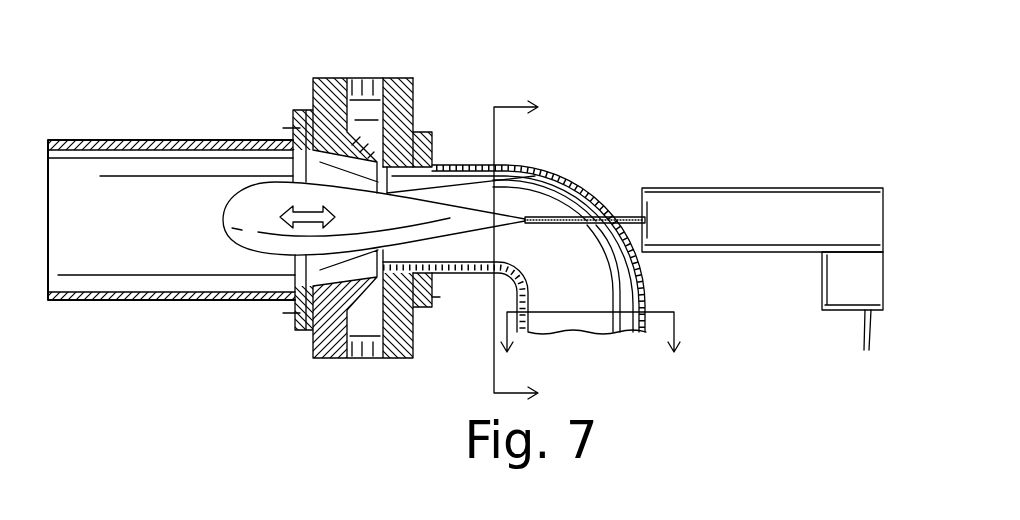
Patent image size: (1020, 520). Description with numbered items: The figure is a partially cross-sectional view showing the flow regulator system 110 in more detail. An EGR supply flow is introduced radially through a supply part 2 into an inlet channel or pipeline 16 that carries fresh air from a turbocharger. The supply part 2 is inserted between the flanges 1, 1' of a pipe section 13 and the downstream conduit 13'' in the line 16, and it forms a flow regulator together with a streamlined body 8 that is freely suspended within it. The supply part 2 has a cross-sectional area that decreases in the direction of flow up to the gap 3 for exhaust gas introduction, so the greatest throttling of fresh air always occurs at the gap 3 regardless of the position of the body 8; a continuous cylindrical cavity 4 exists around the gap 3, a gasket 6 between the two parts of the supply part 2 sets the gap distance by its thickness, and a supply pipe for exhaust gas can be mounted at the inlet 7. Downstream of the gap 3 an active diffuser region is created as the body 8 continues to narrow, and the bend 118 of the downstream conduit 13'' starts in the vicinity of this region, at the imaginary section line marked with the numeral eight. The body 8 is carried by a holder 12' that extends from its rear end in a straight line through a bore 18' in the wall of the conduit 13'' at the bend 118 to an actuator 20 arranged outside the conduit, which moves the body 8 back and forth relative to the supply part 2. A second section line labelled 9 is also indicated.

The system 110 is at (241, 115).
The flange 1 is at (329, 124).
The flange 1' is at (431, 126).
The supply part 2 is at (321, 374).
The gap 3 is at (450, 168).
The cylindrical cavity 4 is at (350, 317).
The gasket 6 is at (393, 78).
The inlet 7 is at (358, 78).
The streamlined body 8 is at (253, 240).
The section line 9- 9 is at (592, 350).
The holder 12' is at (552, 245).
The pipe section 13 is at (171, 244).
The downstream conduit 13'' is at (518, 220).
The inlet channel 16 is at (466, 287).
The bore 18' is at (585, 194).
The actuator 20 is at (777, 305).
The bend 118 is at (572, 185).